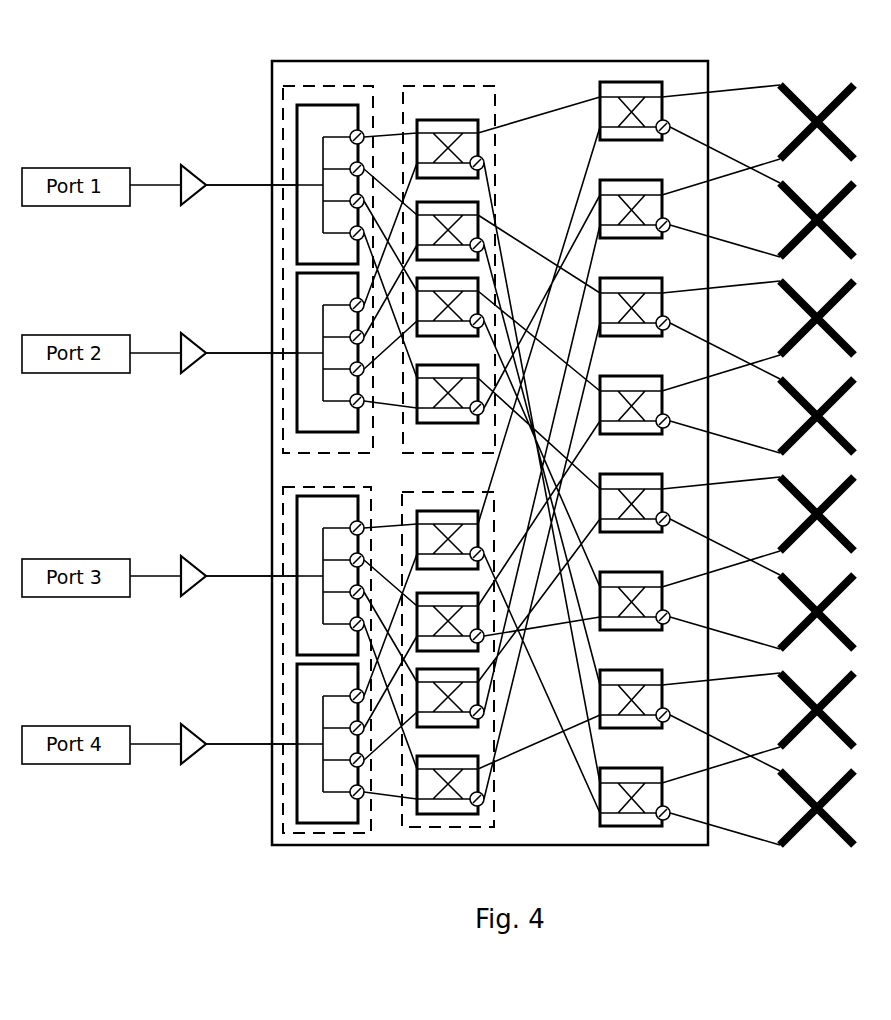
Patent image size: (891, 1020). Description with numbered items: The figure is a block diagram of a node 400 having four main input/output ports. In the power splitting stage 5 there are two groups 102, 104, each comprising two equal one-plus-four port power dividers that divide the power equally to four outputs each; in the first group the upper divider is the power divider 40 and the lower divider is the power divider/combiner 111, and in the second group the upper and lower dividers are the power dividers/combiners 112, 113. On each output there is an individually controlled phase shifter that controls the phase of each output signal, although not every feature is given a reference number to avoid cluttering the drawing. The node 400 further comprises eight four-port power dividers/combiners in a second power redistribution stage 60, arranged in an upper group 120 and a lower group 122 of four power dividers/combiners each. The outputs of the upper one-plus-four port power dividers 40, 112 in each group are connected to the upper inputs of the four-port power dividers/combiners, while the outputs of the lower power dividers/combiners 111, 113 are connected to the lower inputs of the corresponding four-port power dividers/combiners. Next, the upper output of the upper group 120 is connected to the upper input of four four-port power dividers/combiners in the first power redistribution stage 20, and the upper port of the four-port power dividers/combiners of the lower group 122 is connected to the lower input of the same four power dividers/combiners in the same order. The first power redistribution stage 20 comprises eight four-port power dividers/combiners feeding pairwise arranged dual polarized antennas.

The node 400 is at (195, 110).
The group 102 is at (330, 86).
The upper group of four port power dividers/combiners 120 is at (448, 86).
The splitter 40 is at (297, 243).
The 1+4 port power divider/combiner 111 is at (297, 297).
The group 104 is at (283, 503).
The 1+4 port power divider/combiner 112 is at (297, 512).
The 1+4 port power divider/combiner 113 is at (297, 678).
The power splitting stage 5 is at (258, 699).
The second power redistribution stage 60 is at (445, 836).
The lower group of four port power dividers/combiners 122 is at (492, 813).
The first power redistribution stage 20 is at (632, 838).